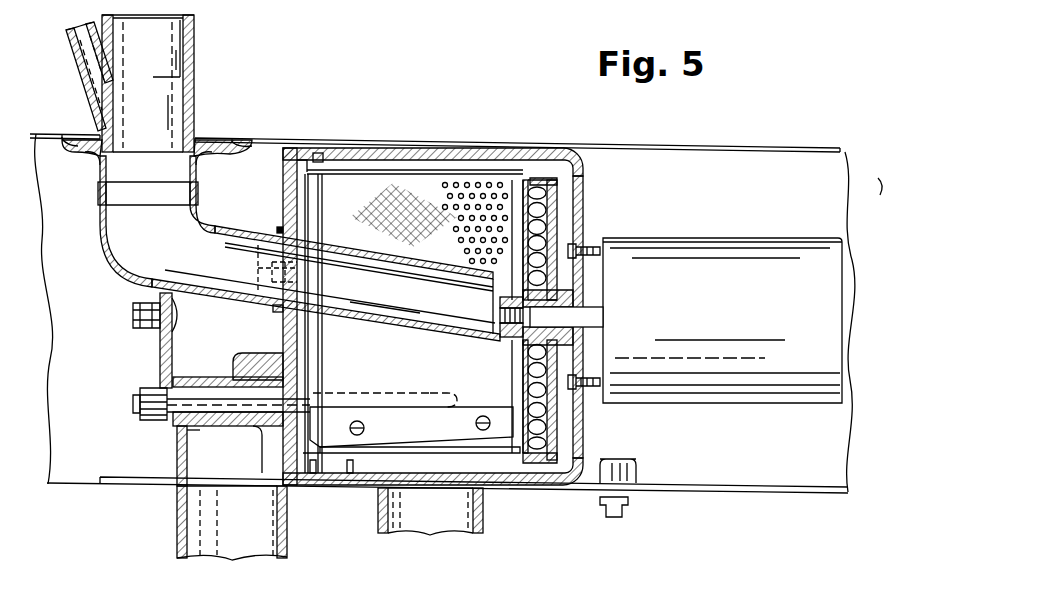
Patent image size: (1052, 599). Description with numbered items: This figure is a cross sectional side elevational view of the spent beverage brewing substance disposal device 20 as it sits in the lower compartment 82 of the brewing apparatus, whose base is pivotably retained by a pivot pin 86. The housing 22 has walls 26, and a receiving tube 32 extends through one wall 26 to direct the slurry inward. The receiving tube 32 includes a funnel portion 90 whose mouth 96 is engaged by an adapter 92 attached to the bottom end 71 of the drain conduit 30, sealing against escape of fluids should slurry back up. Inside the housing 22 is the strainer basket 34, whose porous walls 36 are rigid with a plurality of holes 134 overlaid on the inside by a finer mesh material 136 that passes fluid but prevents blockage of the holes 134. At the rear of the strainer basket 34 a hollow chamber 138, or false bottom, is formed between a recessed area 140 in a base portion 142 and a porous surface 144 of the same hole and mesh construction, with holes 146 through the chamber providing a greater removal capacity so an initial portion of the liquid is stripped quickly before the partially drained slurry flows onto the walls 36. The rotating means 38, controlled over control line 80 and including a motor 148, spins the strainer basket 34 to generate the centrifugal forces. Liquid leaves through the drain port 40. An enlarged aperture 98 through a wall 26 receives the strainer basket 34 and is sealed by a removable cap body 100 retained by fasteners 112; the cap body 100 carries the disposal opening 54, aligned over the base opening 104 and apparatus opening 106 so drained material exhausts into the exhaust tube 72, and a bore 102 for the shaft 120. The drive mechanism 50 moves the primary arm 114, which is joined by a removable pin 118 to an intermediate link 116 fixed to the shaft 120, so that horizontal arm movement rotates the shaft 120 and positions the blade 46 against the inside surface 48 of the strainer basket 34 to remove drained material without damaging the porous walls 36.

The disposal device 20 is at (614, 173).
The housing 22 is at (420, 138).
The walls 26 is at (268, 348).
The drain conduit 30 is at (196, 92).
The receiving tube 32 is at (210, 196).
The strainer basket 34 is at (448, 161).
The porous walls 36 is at (504, 195).
The rotating means 38 is at (829, 450).
The drain port 40 is at (484, 511).
The blade 46 is at (454, 413).
The inside surface 48 is at (488, 178).
The drive mechanism 50 is at (564, 320).
The disposal opening 54 is at (194, 458).
The bottom end 71 is at (196, 123).
The exhaust tube 72 is at (288, 538).
The control line 80 is at (813, 238).
The lower compartment 82 is at (768, 158).
The pivot pin 86 is at (623, 458).
The funnel portion 90 is at (101, 201).
The adapter 92 is at (252, 134).
The mouth 96 is at (90, 157).
The enlarged aperture 98 is at (289, 147).
The cap body 100 is at (266, 368).
The bore 102 is at (143, 408).
The base opening 104 is at (211, 481).
The apparatus opening 106 is at (288, 511).
The fasteners 112 is at (258, 231).
The primary arm 114 is at (141, 284).
The intermediate link 116 is at (160, 352).
The pin 118 is at (131, 318).
The shaft 120 is at (318, 373).
The holes 134 is at (470, 178).
The mesh material 136 is at (378, 200).
The hollow chamber 138 is at (558, 200).
The recessed area 140 is at (553, 216).
The base portion 142 is at (561, 241).
The porous surface 144 is at (530, 371).
The holes 146 is at (541, 178).
The motor 148 is at (760, 382).